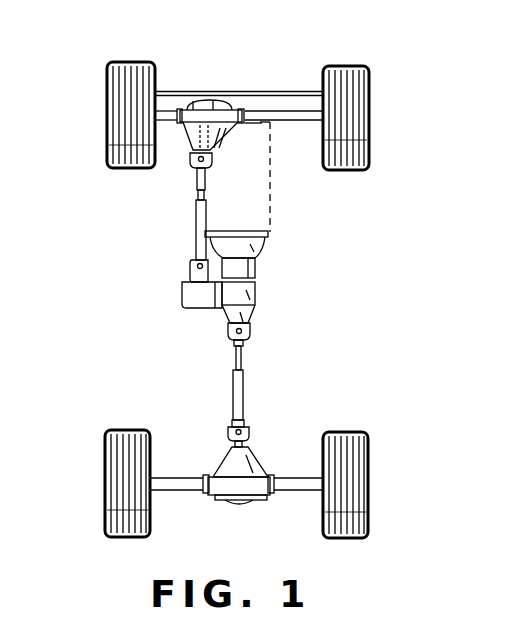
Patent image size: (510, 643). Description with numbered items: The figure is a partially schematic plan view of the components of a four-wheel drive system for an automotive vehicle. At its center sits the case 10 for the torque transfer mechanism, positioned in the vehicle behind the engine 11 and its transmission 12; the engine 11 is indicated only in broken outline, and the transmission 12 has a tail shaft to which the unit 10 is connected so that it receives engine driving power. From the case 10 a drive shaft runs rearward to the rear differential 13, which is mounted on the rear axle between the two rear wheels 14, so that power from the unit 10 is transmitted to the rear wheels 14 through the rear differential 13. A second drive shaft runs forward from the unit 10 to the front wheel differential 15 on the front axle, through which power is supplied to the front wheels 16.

The case for the torque transfer mechanism 10 is at (254, 297).
The engine 11 is at (272, 203).
The transmission 12 is at (248, 248).
The rear differential 13 is at (254, 460).
The rear wheels 14 is at (108, 513).
The front wheel differential 15 is at (193, 133).
The front wheels 16 is at (112, 96).